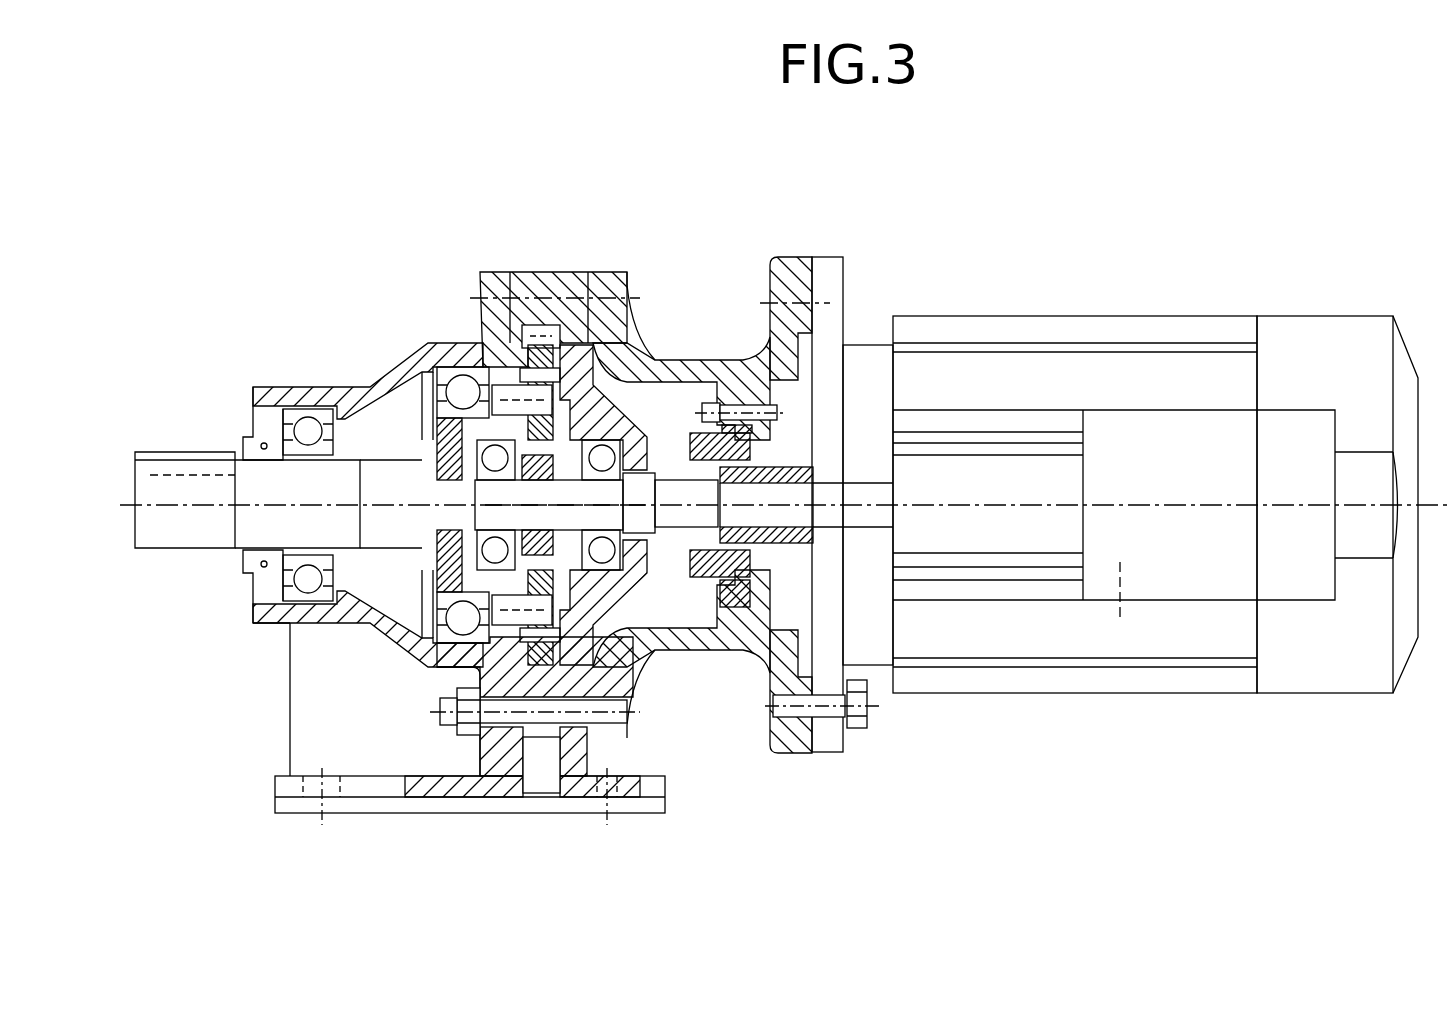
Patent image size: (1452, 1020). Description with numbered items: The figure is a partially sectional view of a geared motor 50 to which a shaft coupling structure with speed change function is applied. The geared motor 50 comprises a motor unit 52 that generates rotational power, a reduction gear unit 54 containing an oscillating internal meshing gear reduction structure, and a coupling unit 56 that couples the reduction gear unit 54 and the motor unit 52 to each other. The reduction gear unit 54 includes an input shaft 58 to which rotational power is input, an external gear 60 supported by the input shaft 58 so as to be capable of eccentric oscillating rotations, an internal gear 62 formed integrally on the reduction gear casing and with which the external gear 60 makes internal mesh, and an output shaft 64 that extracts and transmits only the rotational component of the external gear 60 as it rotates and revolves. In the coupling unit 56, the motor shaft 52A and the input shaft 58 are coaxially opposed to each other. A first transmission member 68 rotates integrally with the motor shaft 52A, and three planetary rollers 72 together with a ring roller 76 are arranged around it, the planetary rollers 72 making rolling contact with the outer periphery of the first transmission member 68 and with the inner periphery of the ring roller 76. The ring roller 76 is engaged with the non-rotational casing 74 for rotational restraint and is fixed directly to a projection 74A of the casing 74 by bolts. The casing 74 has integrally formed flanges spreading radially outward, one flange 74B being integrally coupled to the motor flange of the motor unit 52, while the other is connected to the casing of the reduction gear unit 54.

The geared motor 50 is at (1070, 230).
The motor unit 52 is at (1218, 306).
The motor shaft 52A is at (805, 380).
The reduction gear unit 54 is at (416, 198).
The coupling unit 56 is at (771, 808).
The input shaft 58 is at (652, 528).
The external gear 60 is at (538, 357).
The internal gear 62 is at (550, 335).
The output shaft 64 is at (198, 480).
The first transmission member 68 is at (773, 477).
The planetary rollers 72 is at (760, 457).
The casing 74 is at (688, 360).
The projection 74A is at (627, 282).
The flange 74B is at (797, 257).
The ring roller 76 is at (737, 607).